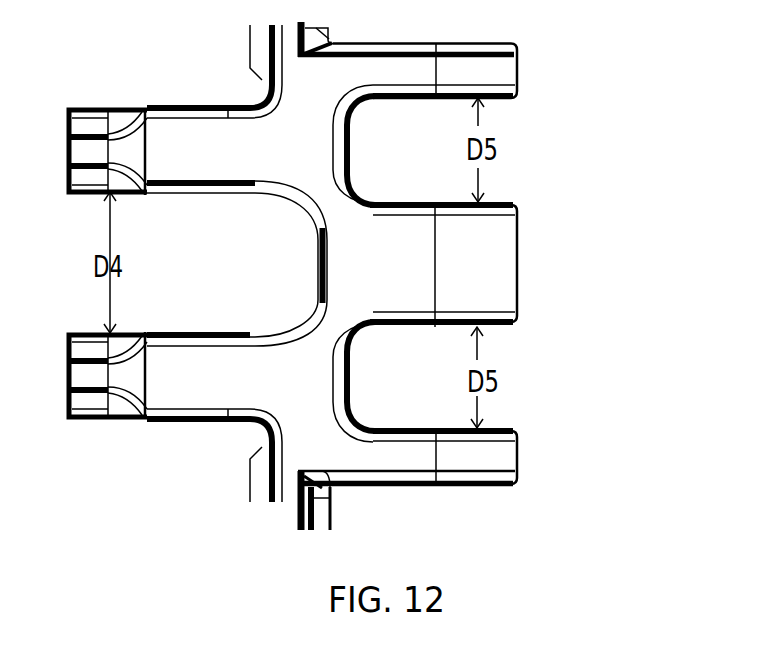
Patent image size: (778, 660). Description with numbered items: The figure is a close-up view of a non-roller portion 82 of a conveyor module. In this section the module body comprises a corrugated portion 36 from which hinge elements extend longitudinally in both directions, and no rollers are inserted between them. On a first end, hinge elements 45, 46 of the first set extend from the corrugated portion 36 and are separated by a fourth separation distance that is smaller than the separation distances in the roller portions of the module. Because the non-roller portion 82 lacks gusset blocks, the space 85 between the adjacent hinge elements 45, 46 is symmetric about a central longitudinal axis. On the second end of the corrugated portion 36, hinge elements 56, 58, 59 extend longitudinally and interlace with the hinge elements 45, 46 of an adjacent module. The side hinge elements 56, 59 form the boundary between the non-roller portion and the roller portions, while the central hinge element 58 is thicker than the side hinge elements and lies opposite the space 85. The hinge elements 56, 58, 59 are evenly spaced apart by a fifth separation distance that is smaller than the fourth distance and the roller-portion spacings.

The corrugated portion 36 is at (320, 250).
The hinge element 45 is at (87, 406).
The hinge element 46 is at (88, 174).
The hinge element 56 is at (510, 457).
The central hinge element 58 is at (505, 266).
The hinge element 59 is at (518, 63).
The non-roller portion 82 is at (583, 153).
The space 85 is at (222, 271).